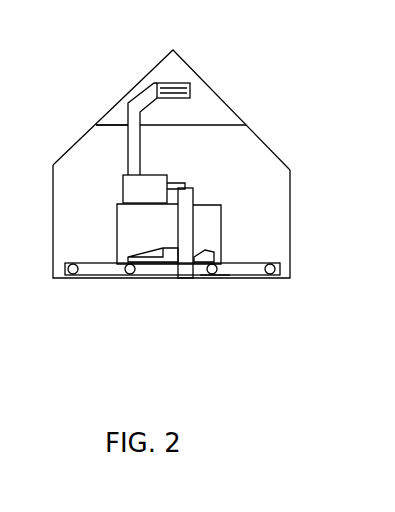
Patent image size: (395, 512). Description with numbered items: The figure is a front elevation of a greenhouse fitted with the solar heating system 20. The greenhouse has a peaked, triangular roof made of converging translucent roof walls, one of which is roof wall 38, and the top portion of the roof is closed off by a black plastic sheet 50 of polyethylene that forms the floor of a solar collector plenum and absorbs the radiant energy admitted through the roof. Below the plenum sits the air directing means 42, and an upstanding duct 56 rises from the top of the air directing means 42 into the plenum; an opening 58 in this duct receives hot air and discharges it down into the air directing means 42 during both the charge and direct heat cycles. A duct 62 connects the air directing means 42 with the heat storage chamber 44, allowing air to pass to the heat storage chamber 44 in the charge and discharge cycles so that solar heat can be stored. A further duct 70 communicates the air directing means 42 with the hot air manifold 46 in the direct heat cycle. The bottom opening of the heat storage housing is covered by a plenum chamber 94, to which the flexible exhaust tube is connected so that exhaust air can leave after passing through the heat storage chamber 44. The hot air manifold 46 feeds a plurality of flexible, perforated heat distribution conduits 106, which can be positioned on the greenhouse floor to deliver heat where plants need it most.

The solar heating system 20 is at (236, 171).
The roof wall 38 is at (228, 106).
The air directing means 42 is at (123, 190).
The heat storage chamber 44 is at (221, 218).
The hot air manifold 46 is at (265, 265).
The black plastic sheet 50 is at (103, 124).
The upstanding duct 56 is at (142, 137).
The opening 58 is at (203, 83).
The duct 62 is at (182, 184).
The duct 70 is at (173, 223).
The plenum chamber 94 is at (205, 250).
The heat distribution conduits 106 is at (214, 272).